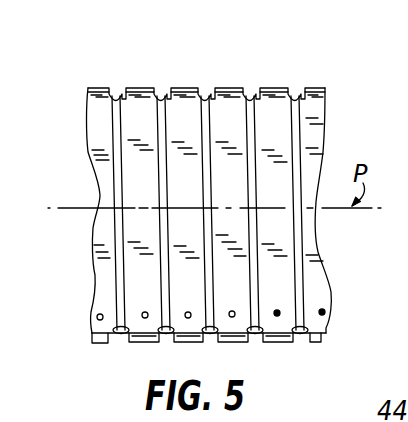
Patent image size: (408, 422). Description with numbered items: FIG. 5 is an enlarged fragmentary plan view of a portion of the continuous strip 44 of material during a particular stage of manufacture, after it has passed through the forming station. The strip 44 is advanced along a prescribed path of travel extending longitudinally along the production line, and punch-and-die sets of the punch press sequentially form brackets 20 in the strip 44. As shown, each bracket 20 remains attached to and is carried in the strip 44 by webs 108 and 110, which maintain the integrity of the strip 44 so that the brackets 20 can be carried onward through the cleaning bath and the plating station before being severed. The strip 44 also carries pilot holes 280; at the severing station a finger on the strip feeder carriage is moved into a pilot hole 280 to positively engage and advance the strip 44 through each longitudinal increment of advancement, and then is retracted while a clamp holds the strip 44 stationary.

The strip 44 is at (240, 86).
The web 110 is at (149, 92).
The bracket 20 is at (223, 174).
The web 108 is at (165, 337).
The pilot hole 280 is at (277, 313).